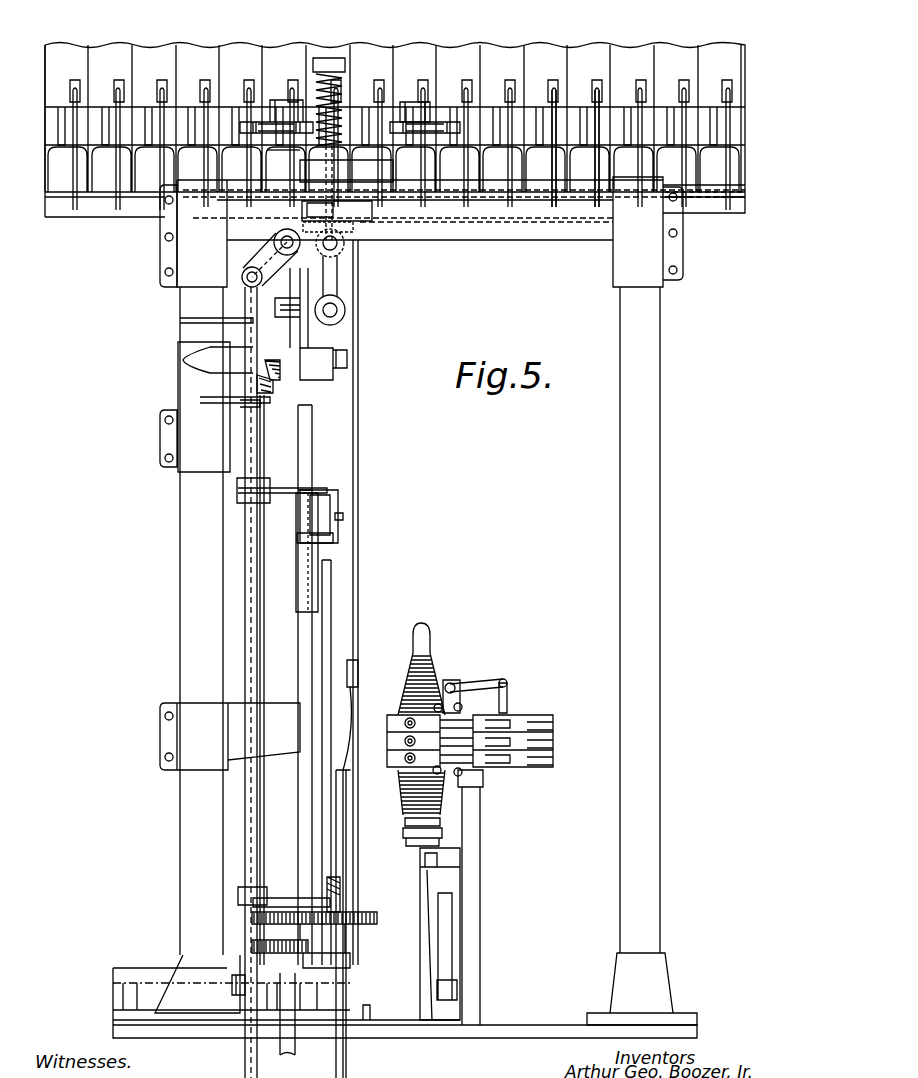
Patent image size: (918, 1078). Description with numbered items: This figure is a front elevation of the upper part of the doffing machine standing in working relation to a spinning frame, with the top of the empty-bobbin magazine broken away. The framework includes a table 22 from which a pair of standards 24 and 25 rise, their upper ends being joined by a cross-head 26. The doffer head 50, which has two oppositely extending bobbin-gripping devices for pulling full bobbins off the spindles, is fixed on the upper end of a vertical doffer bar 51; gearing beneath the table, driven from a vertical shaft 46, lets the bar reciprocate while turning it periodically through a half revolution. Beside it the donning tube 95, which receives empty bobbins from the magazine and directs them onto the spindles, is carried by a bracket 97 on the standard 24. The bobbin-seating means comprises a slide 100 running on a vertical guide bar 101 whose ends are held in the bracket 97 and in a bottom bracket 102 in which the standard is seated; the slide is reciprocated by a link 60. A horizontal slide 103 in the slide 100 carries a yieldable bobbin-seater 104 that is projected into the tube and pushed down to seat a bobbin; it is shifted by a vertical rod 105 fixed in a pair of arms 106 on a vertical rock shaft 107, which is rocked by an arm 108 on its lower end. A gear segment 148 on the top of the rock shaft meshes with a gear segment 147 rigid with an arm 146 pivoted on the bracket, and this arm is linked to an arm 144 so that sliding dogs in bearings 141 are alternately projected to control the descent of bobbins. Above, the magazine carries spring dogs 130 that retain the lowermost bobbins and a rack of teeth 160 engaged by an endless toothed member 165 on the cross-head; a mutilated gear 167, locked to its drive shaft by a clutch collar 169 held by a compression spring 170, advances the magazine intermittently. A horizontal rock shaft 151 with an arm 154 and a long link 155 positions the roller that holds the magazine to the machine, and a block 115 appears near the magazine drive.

The table 22 is at (290, 1073).
The standard 24 is at (197, 565).
The standard 25 is at (655, 532).
The cross-head 26 is at (490, 233).
The vertical shaft 46 is at (296, 1053).
The doffer head 50 is at (470, 727).
The doffer bar 51 is at (467, 930).
The link 60 is at (343, 1070).
The donning tube 95 is at (350, 607).
The bracket 97 is at (283, 442).
The slide 100 is at (310, 570).
The guide bar 101 is at (307, 853).
The bracket 102 is at (347, 957).
The horizontal slide 103 is at (317, 528).
The bobbin-seater 104 is at (340, 520).
The vertical rod 105 is at (325, 652).
The arms 106 is at (320, 905).
The rock shaft 107 is at (258, 664).
The arm 108 is at (232, 985).
The cap block 115 is at (433, 118).
The spring dogs 130 is at (75, 212).
The bearings 141 is at (343, 313).
The arm 144 is at (316, 301).
The arm 146 is at (295, 340).
The gear segment 147 is at (283, 376).
The gear segment 148 is at (266, 390).
The rock shaft 151 is at (278, 238).
The arm 154 is at (243, 274).
The link 155 is at (165, 318).
The teeth 160 is at (575, 258).
The endless toothed member 165 is at (440, 127).
The mutilated gear 167 is at (387, 163).
The clutch collar 169 is at (285, 152).
The compression spring 170 is at (353, 80).